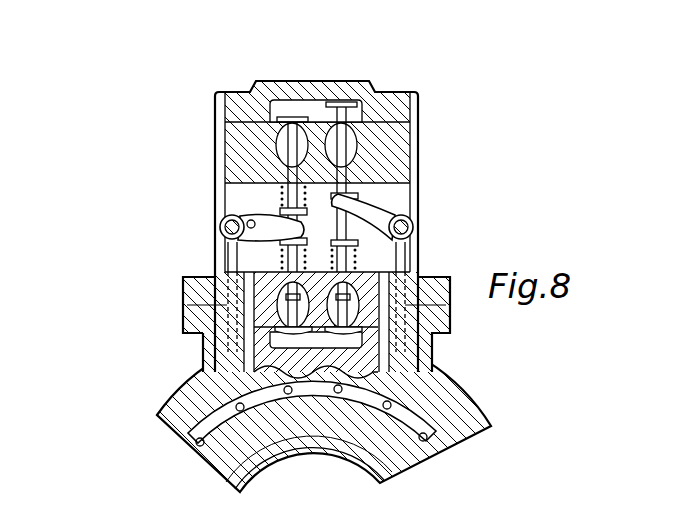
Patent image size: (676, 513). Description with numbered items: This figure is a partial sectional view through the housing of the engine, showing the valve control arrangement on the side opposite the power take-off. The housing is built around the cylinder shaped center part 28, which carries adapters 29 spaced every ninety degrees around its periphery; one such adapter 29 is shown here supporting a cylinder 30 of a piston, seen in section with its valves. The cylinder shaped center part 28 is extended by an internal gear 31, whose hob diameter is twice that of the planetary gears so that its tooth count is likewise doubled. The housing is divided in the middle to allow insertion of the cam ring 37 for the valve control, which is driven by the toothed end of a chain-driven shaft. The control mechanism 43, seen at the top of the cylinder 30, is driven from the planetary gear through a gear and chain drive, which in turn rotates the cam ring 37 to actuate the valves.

The cylinder shaped center part 28 is at (203, 333).
The adapter 29 is at (183, 279).
The cylinder 30 is at (260, 270).
The internal gear 31 is at (252, 457).
The cam ring 37 is at (200, 413).
The control mechanism 43 is at (253, 215).